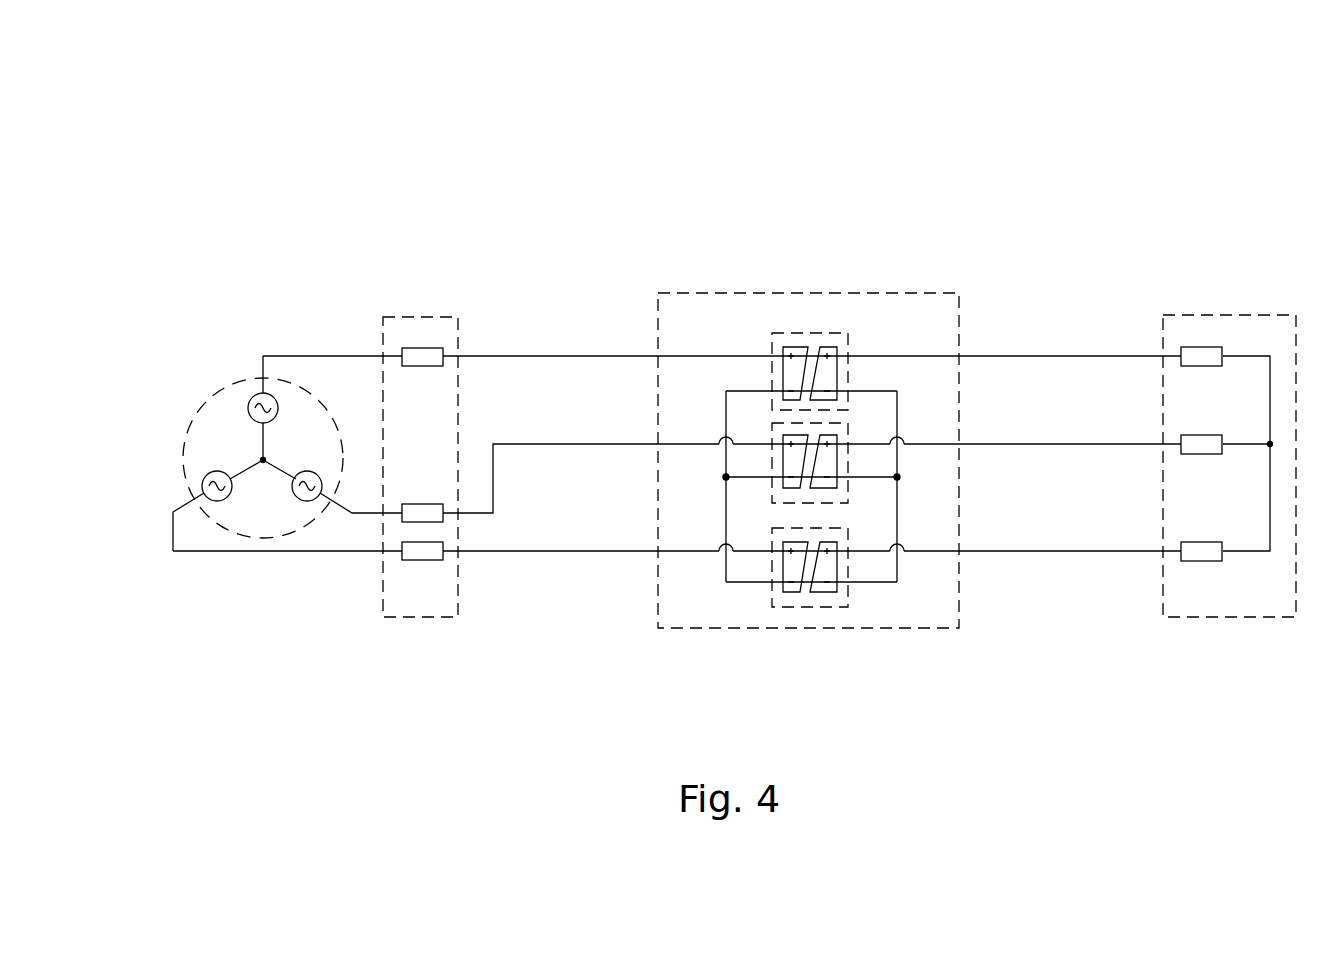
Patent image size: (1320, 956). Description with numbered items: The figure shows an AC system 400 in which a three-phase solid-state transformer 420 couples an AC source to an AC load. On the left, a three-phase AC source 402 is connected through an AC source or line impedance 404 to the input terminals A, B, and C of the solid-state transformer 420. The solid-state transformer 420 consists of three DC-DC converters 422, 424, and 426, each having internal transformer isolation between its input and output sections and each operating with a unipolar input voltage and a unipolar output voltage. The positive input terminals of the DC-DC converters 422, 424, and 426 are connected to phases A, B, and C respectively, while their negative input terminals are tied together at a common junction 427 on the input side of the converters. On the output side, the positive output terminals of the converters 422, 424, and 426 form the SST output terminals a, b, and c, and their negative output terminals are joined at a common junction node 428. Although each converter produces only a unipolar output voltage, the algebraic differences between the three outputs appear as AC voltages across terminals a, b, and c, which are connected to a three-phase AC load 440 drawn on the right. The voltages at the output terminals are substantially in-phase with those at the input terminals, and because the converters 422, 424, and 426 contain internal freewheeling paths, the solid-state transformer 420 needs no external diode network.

The system 400 is at (318, 134).
The three-phase AC source 402 is at (196, 402).
The AC source or line impedance 404 is at (376, 333).
The three-phase solid-state transformer 420 is at (698, 290).
The DC-DC converter 422 is at (821, 329).
The DC-DC converter 424 is at (855, 493).
The DC-DC converter 426 is at (808, 610).
The common junction 427 is at (720, 476).
The common junction node 428 is at (904, 476).
The three-phase AC load 440 is at (1187, 312).